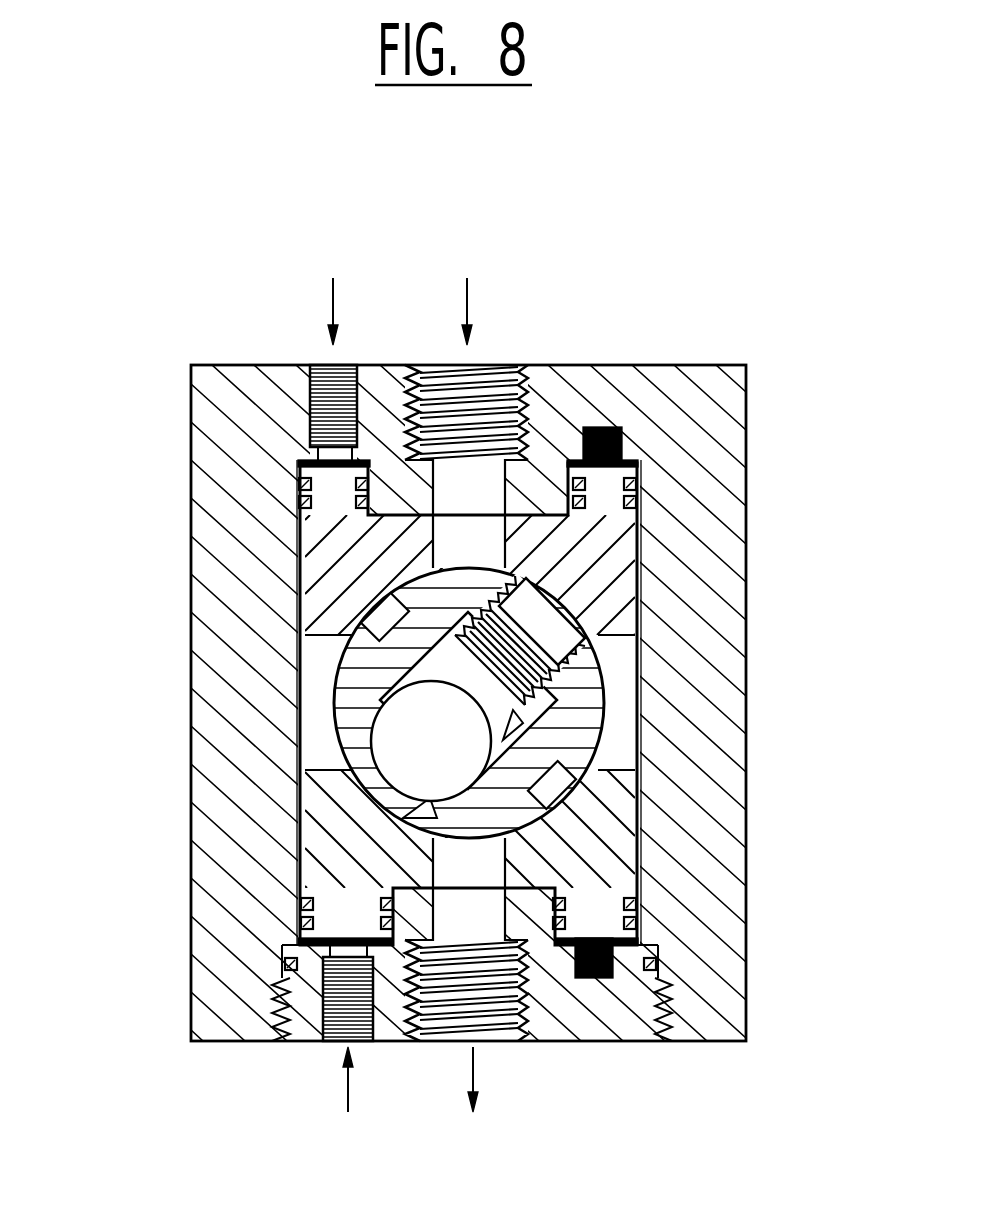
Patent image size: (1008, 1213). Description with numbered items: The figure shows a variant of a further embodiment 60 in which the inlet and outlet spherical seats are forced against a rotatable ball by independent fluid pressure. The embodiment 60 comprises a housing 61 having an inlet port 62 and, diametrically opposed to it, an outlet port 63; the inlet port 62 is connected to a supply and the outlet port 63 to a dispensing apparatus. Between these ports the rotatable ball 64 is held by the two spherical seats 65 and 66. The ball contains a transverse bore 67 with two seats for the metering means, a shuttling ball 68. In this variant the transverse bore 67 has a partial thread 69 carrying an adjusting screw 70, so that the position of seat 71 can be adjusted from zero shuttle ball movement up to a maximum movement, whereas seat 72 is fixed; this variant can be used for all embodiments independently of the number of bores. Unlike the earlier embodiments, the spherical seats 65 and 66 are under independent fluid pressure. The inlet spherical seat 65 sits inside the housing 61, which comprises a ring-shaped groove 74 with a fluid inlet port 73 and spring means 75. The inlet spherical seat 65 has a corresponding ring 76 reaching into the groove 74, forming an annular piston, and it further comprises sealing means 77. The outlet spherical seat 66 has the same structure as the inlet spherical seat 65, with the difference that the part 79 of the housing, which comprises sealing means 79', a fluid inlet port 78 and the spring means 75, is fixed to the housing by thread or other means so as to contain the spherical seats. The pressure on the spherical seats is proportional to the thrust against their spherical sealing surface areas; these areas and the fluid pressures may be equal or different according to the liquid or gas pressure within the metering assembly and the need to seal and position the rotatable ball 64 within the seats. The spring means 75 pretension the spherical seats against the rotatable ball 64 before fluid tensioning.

The embodiment 60 is at (424, 349).
The housing 61 is at (680, 422).
The inlet port 62 is at (495, 373).
The outlet port 63 is at (438, 1015).
The rotatable ball 64 is at (370, 662).
The inlet spherical seat 65 is at (327, 558).
The outlet spherical seat 66 is at (333, 826).
The transverse bore 67 is at (513, 733).
The shuttling ball 68 is at (412, 739).
The partial thread 69 is at (548, 665).
The adjusting screw 70 is at (507, 582).
The seat 71 is at (520, 720).
The seat 72 is at (545, 808).
The fluid inlet port 73 is at (322, 366).
The ring-shaped groove 74 is at (302, 457).
The spring means 75 is at (600, 425).
The ring 76 is at (600, 478).
The sealing means 77 is at (298, 480).
The fluid inlet port 78 is at (337, 1040).
The part of the housing 79 is at (441, 1090).
The sealing means 79' is at (667, 1080).